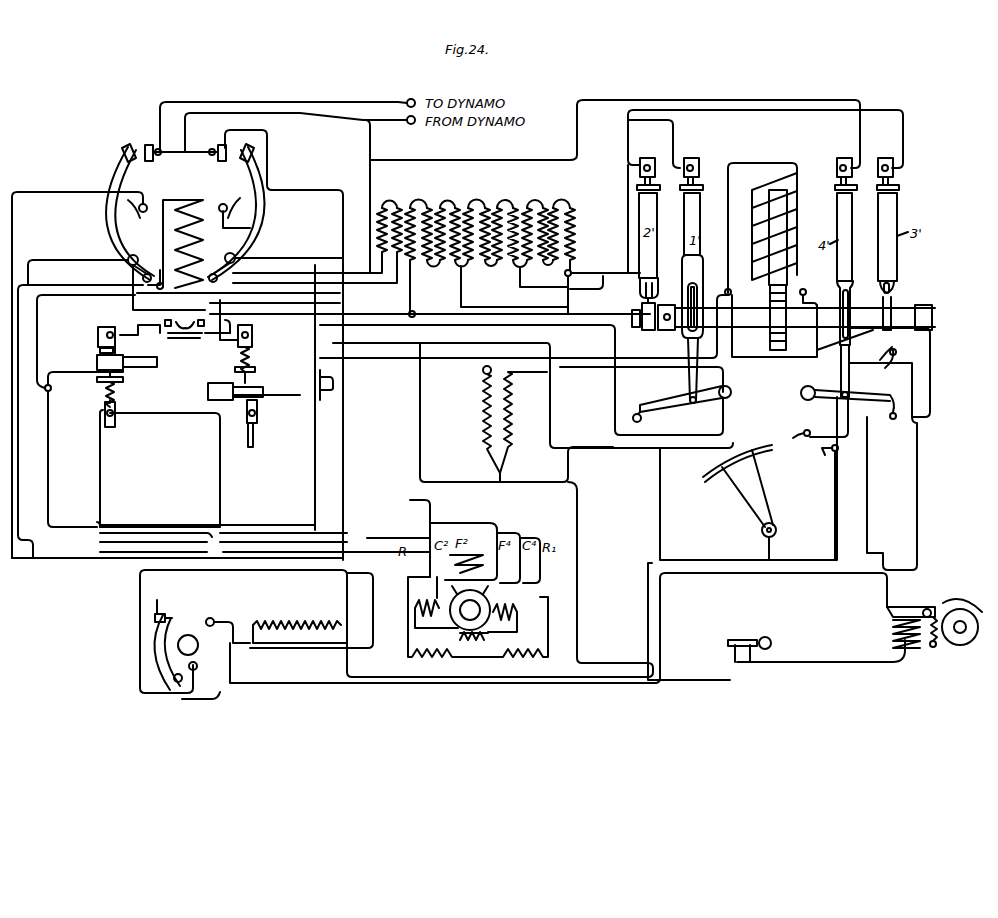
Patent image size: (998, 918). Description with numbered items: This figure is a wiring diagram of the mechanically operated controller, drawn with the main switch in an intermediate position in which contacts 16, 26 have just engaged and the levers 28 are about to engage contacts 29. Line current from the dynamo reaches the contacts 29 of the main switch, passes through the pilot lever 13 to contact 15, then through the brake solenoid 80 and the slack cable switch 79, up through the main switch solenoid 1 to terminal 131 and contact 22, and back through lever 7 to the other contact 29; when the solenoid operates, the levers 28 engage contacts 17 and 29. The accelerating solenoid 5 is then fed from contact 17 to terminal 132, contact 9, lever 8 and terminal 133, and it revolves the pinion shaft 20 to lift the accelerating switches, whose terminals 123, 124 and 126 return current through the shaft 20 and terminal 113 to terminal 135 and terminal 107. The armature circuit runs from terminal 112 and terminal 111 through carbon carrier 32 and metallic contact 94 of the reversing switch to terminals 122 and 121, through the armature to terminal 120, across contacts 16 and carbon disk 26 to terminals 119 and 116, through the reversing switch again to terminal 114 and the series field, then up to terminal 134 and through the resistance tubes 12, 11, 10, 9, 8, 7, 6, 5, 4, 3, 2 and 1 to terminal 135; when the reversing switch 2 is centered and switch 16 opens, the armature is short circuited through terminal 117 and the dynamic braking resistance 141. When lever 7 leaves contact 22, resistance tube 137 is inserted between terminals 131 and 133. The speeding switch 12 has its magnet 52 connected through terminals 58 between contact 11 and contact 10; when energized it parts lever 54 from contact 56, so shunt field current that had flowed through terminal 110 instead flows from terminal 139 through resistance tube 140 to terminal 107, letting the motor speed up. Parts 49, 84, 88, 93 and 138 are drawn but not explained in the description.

The main switch solenoid 1 is at (183, 236).
The reversing switch 2 is at (552, 228).
The resistance tube 3 is at (537, 219).
The resistance tube 4 is at (540, 238).
The accelerating solenoid 5 is at (790, 210).
The resistance tube 6 is at (493, 228).
The lever 7 is at (672, 403).
The lever 8 is at (870, 401).
The contact 9 is at (895, 420).
The contact 10 is at (900, 356).
The contact 11 is at (630, 369).
The speeding switch 12 is at (417, 250).
The pilot lever 13 is at (739, 502).
The contact 15 is at (797, 429).
The switch contact 16 is at (182, 322).
The contact 17 is at (226, 192).
The pinion shaft 20 is at (805, 317).
The contact 22 is at (652, 421).
The carbon disk 26 is at (171, 335).
The main switch lever 28 is at (108, 218).
The contact 29 is at (205, 156).
The carbon carrier 32 is at (150, 366).
The pivot 49 is at (149, 274).
The magnet coil 52 is at (180, 648).
The lever 54 is at (172, 680).
The contact 56 is at (168, 616).
The terminal 58 is at (214, 620).
The slack cable switch 79 is at (742, 640).
The brake solenoid 80 is at (893, 634).
The contact plate 84 is at (96, 358).
The contact plate 88 is at (96, 364).
The spring 93 is at (118, 384).
The metallic contact 94 is at (300, 396).
The terminal 107 is at (128, 262).
The terminal 110 is at (216, 700).
The terminal 111 is at (332, 384).
The terminal 112 is at (236, 257).
The terminal 113 is at (664, 320).
The terminal 114 is at (51, 391).
The terminal 116 is at (100, 328).
The reversing switch terminal 117 is at (252, 336).
The terminal 119 is at (165, 323).
The terminal 120 is at (218, 333).
The terminal 121 is at (116, 416).
The terminal 122 is at (258, 414).
The terminal 123 is at (693, 160).
The terminal 124 is at (648, 160).
The terminal 126 is at (843, 160).
The terminal 131 is at (483, 372).
The terminal 132 is at (771, 235).
The terminal 133 is at (504, 476).
The terminal 134 is at (416, 311).
The terminal 135 is at (565, 276).
The resistance tube 137 is at (484, 434).
The resistance 138 is at (512, 432).
The terminal 139 is at (311, 620).
The resistance tube 140 is at (300, 621).
The dynamic braking resistance 141 is at (396, 205).